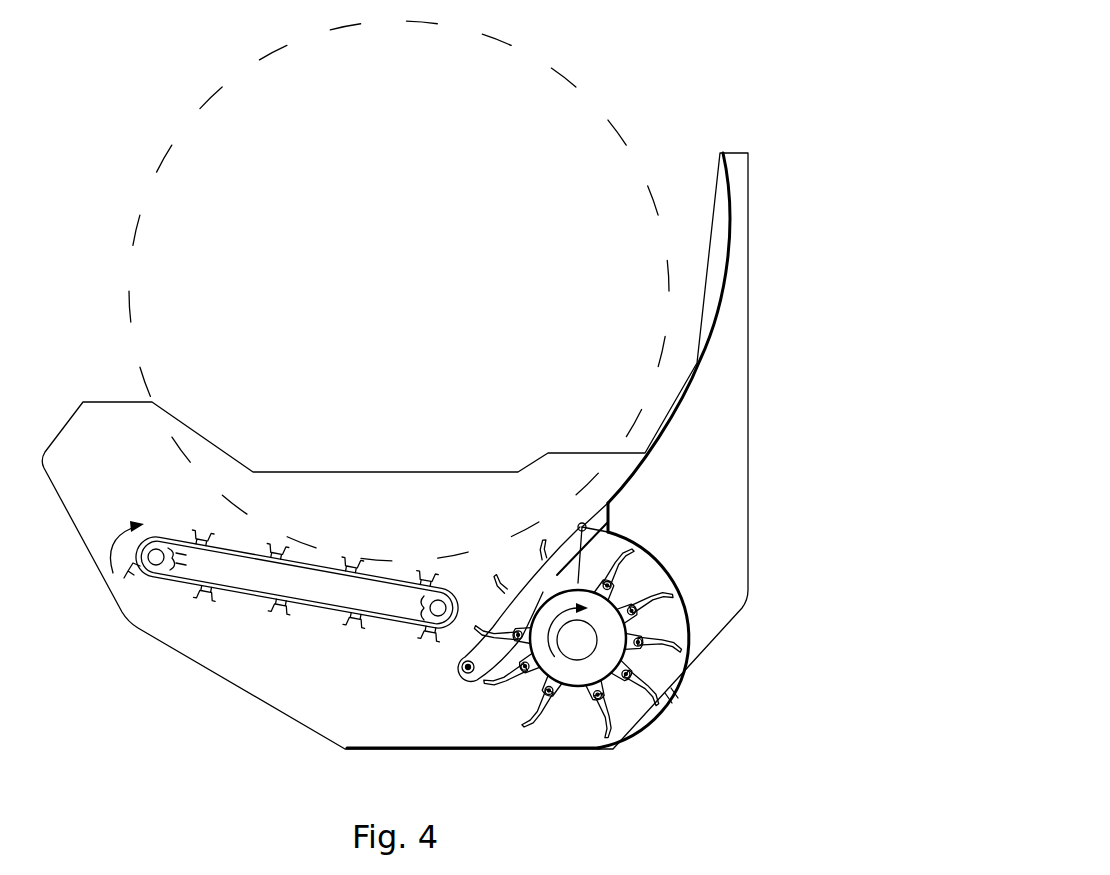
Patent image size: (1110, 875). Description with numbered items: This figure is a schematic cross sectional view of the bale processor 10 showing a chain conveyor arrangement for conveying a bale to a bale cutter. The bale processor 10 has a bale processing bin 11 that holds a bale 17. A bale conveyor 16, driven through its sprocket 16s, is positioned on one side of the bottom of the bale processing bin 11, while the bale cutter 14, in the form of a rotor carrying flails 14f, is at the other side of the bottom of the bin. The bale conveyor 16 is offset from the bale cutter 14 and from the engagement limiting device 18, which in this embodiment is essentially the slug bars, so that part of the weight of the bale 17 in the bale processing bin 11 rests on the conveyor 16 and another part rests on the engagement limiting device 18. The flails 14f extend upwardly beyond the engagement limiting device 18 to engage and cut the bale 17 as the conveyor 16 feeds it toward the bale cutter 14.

The bale processor 10 is at (755, 158).
The bale processing bin 11 is at (687, 103).
The bale 17 is at (162, 203).
The bale conveyor 16 is at (305, 545).
The sprocket 16s is at (436, 613).
The engagement limiting device 18 is at (528, 572).
The bale cutter 14 is at (615, 600).
The flails 14f is at (615, 570).